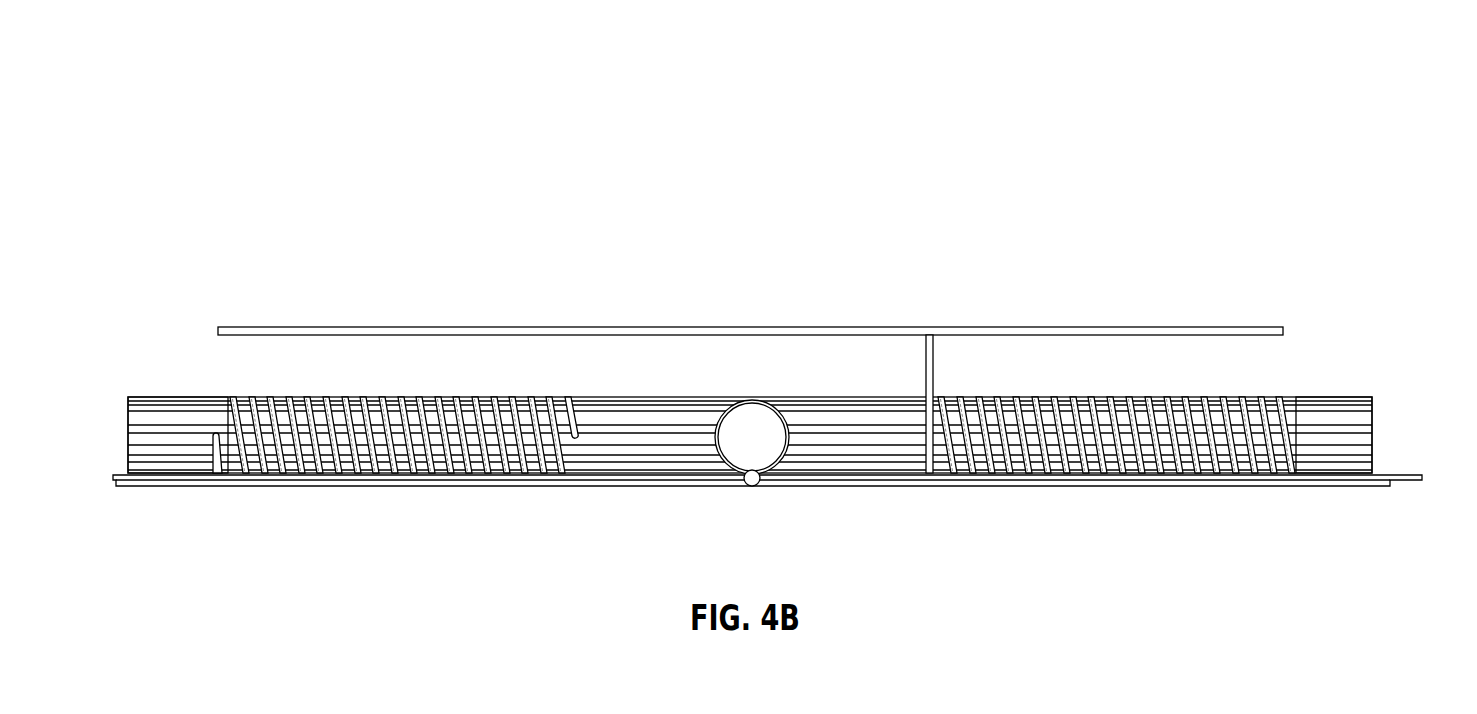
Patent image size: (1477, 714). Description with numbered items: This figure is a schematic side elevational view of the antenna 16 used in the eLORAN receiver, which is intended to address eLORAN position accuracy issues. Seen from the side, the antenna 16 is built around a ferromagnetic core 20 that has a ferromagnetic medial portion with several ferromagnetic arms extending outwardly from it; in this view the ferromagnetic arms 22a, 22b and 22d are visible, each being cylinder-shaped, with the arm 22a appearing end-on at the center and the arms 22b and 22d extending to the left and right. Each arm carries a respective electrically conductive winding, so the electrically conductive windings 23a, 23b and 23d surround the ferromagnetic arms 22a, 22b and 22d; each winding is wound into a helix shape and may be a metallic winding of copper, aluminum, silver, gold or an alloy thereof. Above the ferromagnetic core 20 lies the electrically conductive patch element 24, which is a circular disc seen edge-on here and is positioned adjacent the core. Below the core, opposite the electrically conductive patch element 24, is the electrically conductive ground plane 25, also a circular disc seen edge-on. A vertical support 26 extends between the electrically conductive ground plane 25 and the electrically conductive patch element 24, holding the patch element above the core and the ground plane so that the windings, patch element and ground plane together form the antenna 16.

The antenna 16 is at (1118, 126).
The ferromagnetic core 20 is at (673, 390).
The ferromagnetic arm 22a is at (735, 452).
The ferromagnetic arm 22b is at (157, 412).
The ferromagnetic arm 22d is at (1358, 410).
The electrically conductive winding 23a is at (795, 452).
The electrically conductive winding 23b is at (377, 420).
The electrically conductive winding 23d is at (1245, 420).
The electrically conductive patch element 24 is at (1168, 327).
The electrically conductive ground plane 25 is at (115, 487).
The vertical support 26 is at (940, 365).